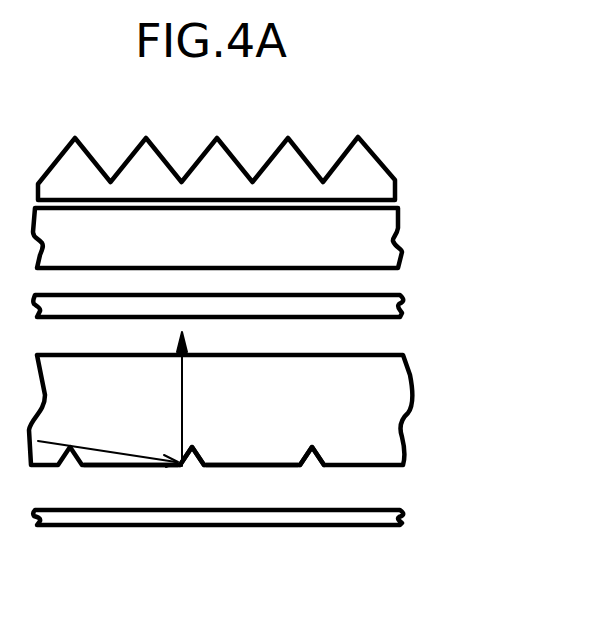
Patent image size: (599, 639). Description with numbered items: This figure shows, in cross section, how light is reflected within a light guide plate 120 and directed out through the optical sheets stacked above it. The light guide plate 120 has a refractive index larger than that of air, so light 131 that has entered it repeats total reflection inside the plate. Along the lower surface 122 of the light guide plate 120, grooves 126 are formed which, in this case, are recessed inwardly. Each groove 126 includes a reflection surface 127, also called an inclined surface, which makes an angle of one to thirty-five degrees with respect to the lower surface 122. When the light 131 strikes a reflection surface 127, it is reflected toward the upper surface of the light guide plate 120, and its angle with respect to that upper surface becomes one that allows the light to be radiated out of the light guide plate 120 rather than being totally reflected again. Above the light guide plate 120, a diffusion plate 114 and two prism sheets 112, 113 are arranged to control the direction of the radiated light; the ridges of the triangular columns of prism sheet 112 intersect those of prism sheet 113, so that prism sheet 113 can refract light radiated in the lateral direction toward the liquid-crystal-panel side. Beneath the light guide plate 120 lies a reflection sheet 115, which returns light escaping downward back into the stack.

The prism sheet 112 is at (396, 181).
The prism sheet 113 is at (401, 245).
The diffusion plate 114 is at (403, 306).
The light guide plate 120 is at (393, 407).
The reflection sheet 115 is at (403, 518).
The reflection surface 127 is at (183, 467).
The groove 126 is at (312, 467).
The light 131 is at (127, 467).
The lower surface 122 is at (257, 467).